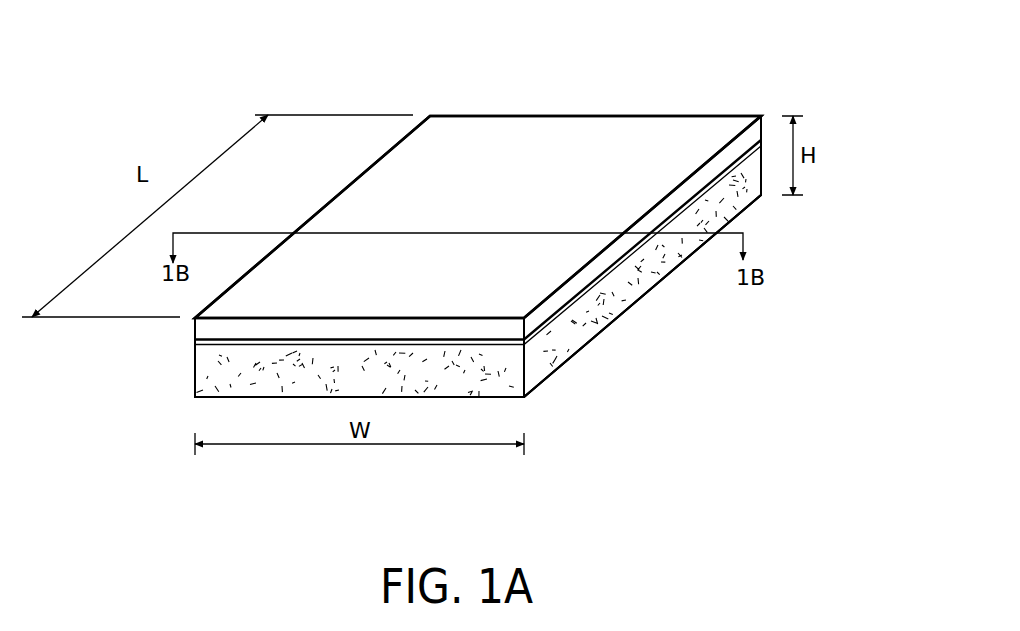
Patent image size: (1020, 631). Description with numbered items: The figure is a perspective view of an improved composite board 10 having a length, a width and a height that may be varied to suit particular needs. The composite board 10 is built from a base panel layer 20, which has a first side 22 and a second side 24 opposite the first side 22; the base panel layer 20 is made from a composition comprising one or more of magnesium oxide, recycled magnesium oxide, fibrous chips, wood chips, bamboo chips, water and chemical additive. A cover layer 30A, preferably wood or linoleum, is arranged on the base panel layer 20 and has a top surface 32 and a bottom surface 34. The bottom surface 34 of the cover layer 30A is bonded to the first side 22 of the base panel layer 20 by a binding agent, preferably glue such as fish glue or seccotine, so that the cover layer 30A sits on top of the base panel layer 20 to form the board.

The composite board 10 is at (660, 396).
The base panel layer 20 is at (203, 382).
The first side 22 is at (768, 128).
The second side 24 is at (747, 205).
The top layer 30A is at (193, 317).
The top surface 32 is at (510, 127).
The bottom surface 34 is at (197, 341).